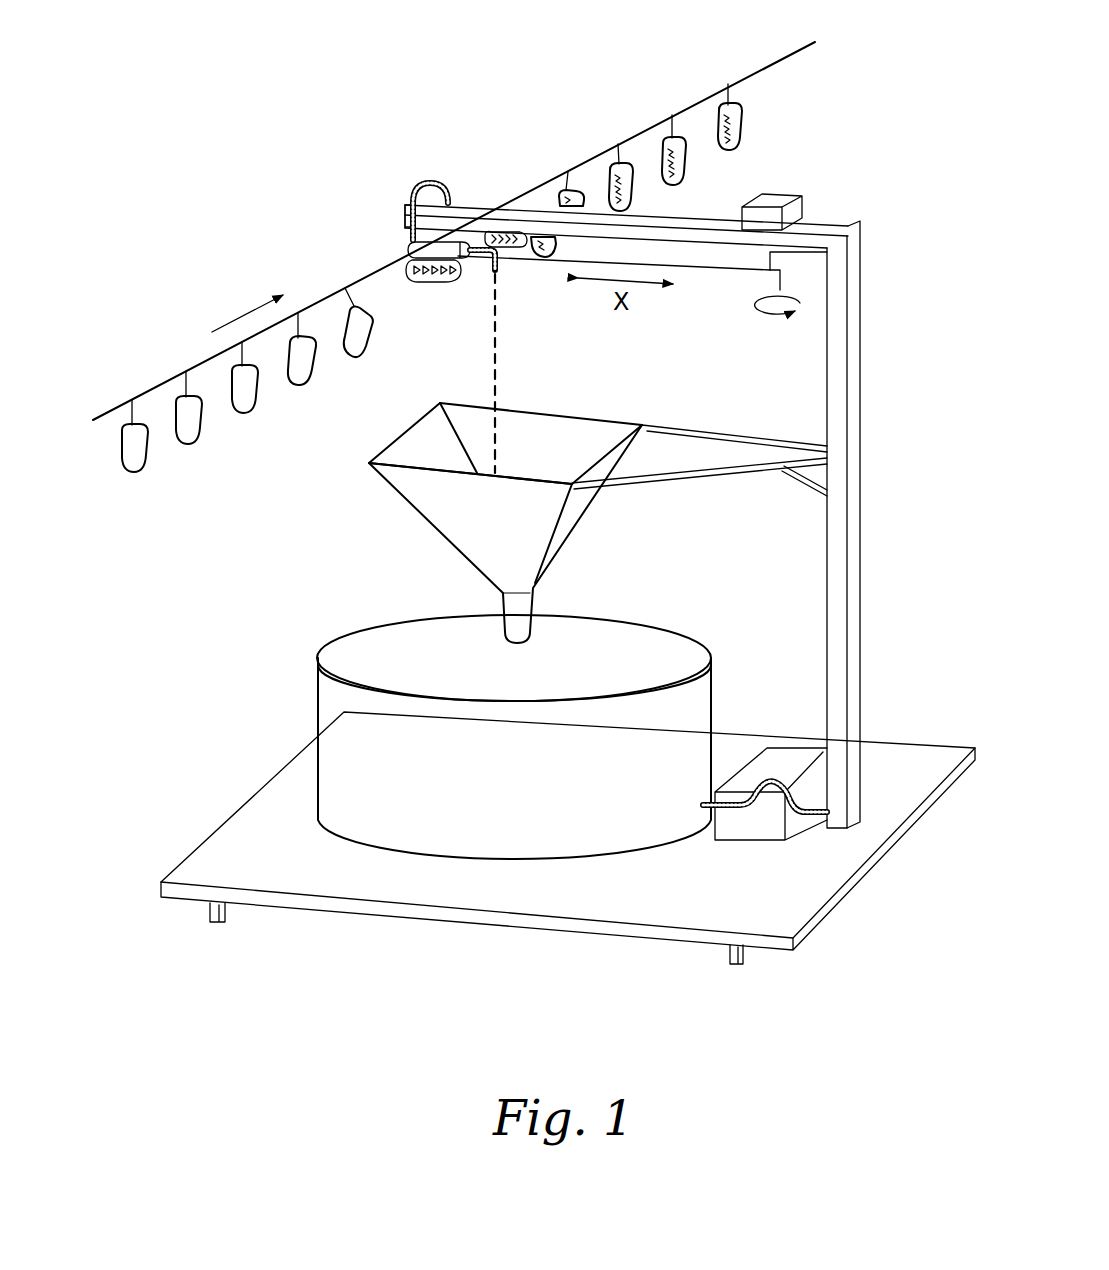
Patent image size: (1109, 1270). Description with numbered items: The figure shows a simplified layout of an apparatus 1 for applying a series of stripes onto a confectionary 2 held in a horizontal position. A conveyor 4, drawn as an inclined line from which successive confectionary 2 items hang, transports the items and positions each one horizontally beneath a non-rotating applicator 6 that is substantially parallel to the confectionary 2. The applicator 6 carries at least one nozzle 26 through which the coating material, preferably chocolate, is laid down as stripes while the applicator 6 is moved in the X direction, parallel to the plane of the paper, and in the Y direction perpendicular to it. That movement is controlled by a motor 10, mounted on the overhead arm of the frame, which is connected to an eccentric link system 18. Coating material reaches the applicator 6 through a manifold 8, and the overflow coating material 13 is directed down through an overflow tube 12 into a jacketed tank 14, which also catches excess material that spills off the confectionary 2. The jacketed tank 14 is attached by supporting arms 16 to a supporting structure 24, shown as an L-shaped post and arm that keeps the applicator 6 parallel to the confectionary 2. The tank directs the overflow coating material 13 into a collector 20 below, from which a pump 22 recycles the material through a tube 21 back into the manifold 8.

The apparatus 1 is at (234, 656).
The confectionary 2 is at (118, 458).
The conveyor 4 is at (617, 130).
The applicator 6 is at (403, 246).
The manifold 8 is at (415, 178).
The motor 10 is at (780, 186).
The overflow tube 12 is at (514, 274).
The overflow coating material 13 is at (488, 360).
The jacketed tank 14 is at (556, 410).
The supporting arms 16 is at (699, 423).
The eccentric link system 18 is at (795, 276).
The collector 20 is at (452, 836).
The tube 21 is at (717, 823).
The pump 22 is at (788, 768).
The supporting structure 24 is at (836, 478).
The nozzle 26 is at (431, 252).